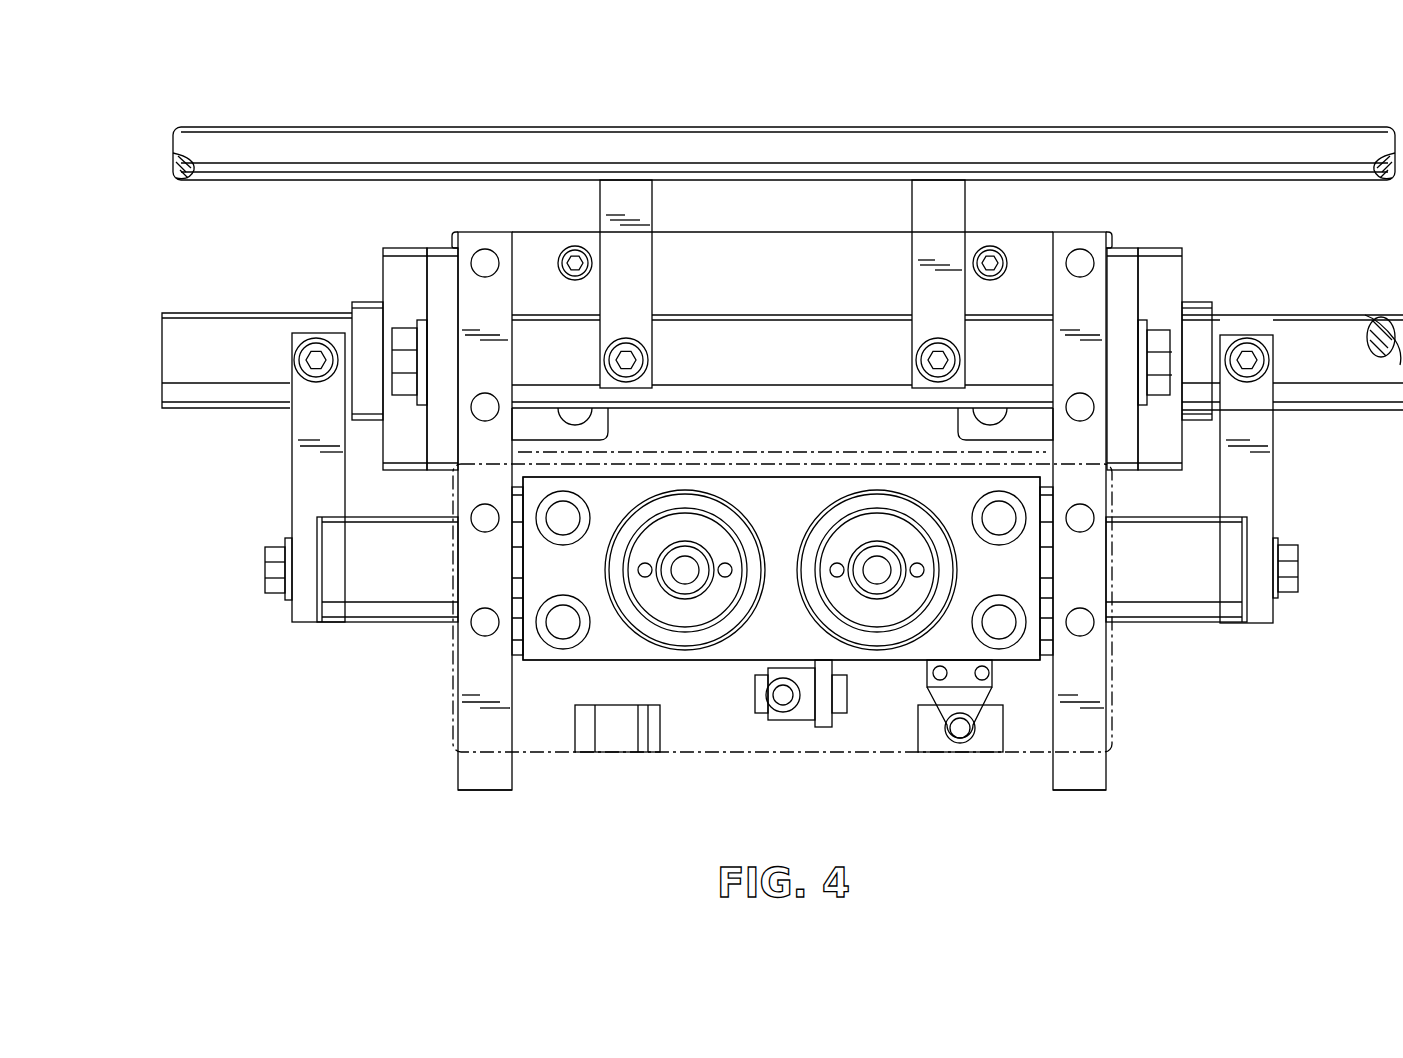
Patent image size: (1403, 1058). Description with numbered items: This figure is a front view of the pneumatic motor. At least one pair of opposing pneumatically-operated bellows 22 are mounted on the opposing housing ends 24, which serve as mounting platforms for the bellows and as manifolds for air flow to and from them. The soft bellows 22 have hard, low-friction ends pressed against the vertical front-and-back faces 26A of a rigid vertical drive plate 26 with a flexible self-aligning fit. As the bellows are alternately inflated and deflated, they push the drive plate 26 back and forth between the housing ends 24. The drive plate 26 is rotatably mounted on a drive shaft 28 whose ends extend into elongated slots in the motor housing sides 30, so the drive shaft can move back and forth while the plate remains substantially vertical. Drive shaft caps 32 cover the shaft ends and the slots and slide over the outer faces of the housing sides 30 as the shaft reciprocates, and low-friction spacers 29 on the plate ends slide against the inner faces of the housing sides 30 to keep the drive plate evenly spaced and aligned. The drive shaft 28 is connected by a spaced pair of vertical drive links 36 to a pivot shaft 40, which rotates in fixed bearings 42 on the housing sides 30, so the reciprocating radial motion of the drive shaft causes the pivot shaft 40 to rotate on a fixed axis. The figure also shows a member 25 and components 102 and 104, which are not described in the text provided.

The rail 102 is at (298, 152).
The strap 104 is at (640, 255).
The side bar 25 is at (537, 255).
The pivot shaft 40 is at (220, 337).
The fixed bearings 42 is at (442, 303).
The vertical drive links 36 is at (315, 487).
The drive shaft caps 32 is at (352, 585).
The drive shaft 28 is at (513, 578).
The low-friction spacers 29 is at (520, 497).
The motor housing sides 30 is at (480, 723).
The drive plate 26 is at (725, 653).
The front-and-back faces 26A is at (788, 525).
The bellows 22 is at (622, 612).
The housing ends 24 is at (793, 752).